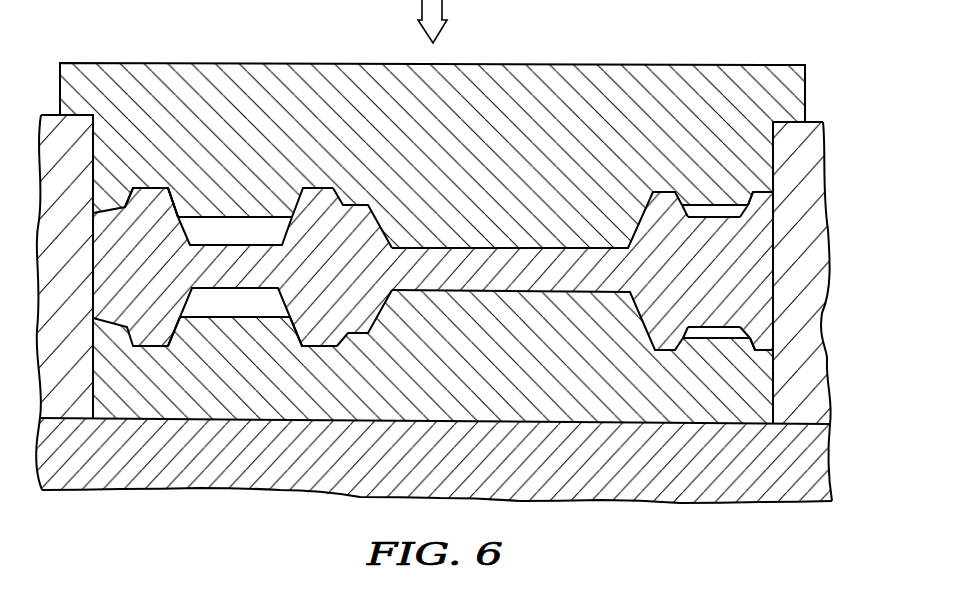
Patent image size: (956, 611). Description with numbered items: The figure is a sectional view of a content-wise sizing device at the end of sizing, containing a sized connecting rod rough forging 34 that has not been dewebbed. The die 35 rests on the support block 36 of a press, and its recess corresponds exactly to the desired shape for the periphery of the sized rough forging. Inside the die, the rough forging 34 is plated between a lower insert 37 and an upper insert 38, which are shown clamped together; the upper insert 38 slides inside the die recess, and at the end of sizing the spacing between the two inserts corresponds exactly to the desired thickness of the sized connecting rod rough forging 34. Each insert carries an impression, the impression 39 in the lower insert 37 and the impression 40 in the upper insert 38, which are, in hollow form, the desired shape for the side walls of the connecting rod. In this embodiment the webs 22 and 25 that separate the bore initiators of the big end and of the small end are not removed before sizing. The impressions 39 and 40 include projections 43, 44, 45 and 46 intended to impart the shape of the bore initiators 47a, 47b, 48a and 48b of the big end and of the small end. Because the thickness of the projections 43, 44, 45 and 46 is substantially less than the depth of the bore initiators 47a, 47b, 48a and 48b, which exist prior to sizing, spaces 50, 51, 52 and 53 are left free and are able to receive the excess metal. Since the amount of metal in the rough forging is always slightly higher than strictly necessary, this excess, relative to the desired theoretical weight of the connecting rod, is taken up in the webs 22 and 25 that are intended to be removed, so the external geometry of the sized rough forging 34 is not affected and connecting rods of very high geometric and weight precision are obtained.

The web 22 is at (245, 243).
The web 25 is at (660, 305).
The sized connecting rod rough forging 34 is at (117, 283).
The die 35 is at (822, 147).
The support block 36 is at (283, 467).
The lower insert 37 is at (245, 392).
The upper insert 38 is at (517, 82).
The impression 39 is at (343, 338).
The impression 40 is at (342, 197).
The projection 43 is at (275, 327).
The projection 44 is at (207, 211).
The projection 45 is at (718, 200).
The projection 46 is at (729, 333).
The bore initiator 47a is at (177, 333).
The bore initiator 47b is at (180, 212).
The bore initiator 48a is at (748, 205).
The bore initiator 48b is at (753, 352).
The space 50 is at (244, 305).
The space 51 is at (258, 223).
The space 52 is at (697, 333).
The space 53 is at (698, 207).